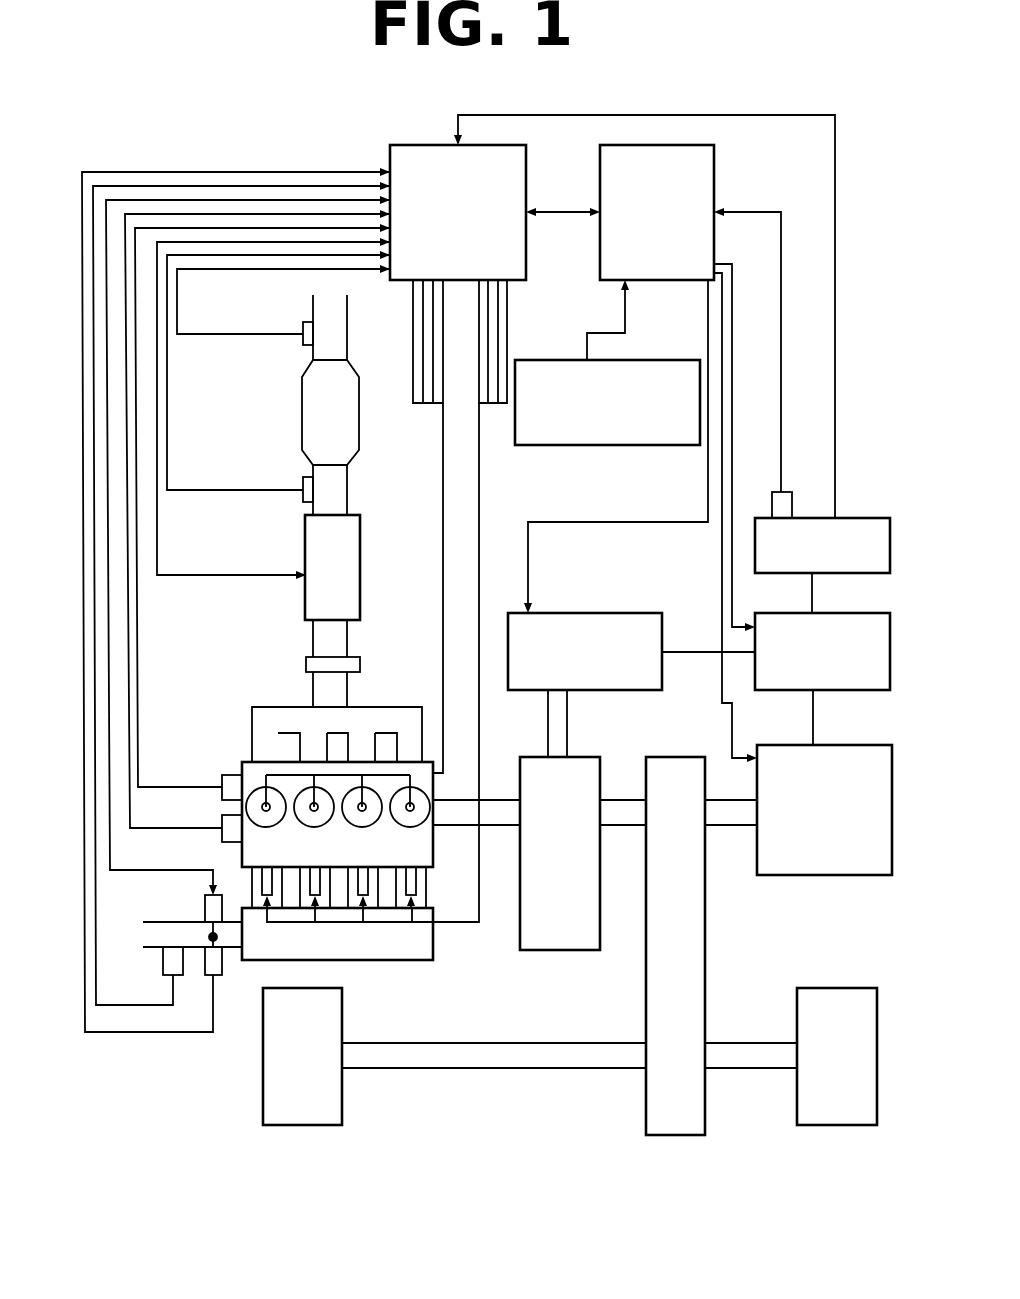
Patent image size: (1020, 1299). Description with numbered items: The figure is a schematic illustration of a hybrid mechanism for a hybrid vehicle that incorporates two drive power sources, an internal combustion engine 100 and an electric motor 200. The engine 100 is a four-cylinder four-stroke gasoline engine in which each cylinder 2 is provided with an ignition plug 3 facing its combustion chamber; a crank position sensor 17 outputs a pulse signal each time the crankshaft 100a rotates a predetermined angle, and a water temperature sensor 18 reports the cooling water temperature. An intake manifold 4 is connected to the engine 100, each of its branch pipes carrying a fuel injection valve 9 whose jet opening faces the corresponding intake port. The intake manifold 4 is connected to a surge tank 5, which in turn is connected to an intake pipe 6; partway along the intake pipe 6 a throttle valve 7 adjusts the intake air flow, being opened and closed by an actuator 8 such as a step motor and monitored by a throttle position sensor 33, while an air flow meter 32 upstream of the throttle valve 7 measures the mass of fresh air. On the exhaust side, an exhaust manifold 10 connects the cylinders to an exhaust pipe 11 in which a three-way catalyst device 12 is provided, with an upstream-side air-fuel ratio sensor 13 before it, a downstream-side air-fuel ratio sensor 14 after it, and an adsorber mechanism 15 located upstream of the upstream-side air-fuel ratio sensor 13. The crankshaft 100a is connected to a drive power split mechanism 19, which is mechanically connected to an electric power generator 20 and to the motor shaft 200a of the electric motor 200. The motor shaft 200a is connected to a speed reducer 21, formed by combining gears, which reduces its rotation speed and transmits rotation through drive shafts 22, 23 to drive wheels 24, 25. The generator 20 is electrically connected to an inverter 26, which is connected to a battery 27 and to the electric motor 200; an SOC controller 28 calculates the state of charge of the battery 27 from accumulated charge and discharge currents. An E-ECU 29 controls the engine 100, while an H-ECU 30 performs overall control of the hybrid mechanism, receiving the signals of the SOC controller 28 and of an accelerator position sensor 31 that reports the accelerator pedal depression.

The cylinder 2 is at (378, 822).
The ignition plug 3 is at (268, 810).
The intake manifold 4 is at (426, 890).
The surge tank 5 is at (418, 962).
The intake pipe 6 is at (156, 930).
The throttle valve 7 is at (218, 940).
The actuator 8 is at (205, 908).
The fuel injection valve 9 is at (263, 887).
The exhaust manifold 10 is at (262, 707).
The exhaust pipe 11 is at (350, 332).
The three-way catalyst device 12 is at (312, 403).
The upstream-side air-fuel ratio sensor 13 is at (303, 485).
The downstream-side air-fuel ratio sensor 14 is at (303, 330).
The adsorber mechanism 15 is at (318, 554).
The crank position sensor 17 is at (222, 780).
The water temperature sensor 18 is at (222, 828).
The drive power split mechanism 19 is at (582, 756).
The electric power generator 20 is at (608, 613).
The speed reducer 21 is at (670, 757).
The drive shaft 22 is at (487, 1068).
The drive shaft 23 is at (757, 1068).
The drive wheel 24 is at (308, 1103).
The drive wheel 25 is at (843, 1110).
The inverter 26 is at (800, 613).
The battery 27 is at (870, 518).
The SOC controller 28 is at (792, 505).
The electronic control unit (E-ECU) 29 is at (527, 194).
The electronic control unit (H-ECU) 30 is at (715, 195).
The accelerator position sensor 31 is at (648, 446).
The air flow meter 32 is at (168, 962).
The throttle position sensor 33 is at (214, 978).
The internal combustion engine 100 is at (238, 757).
The crankshaft 100a is at (500, 818).
The electric motor 200 is at (865, 875).
The motor shaft 200a is at (625, 820).